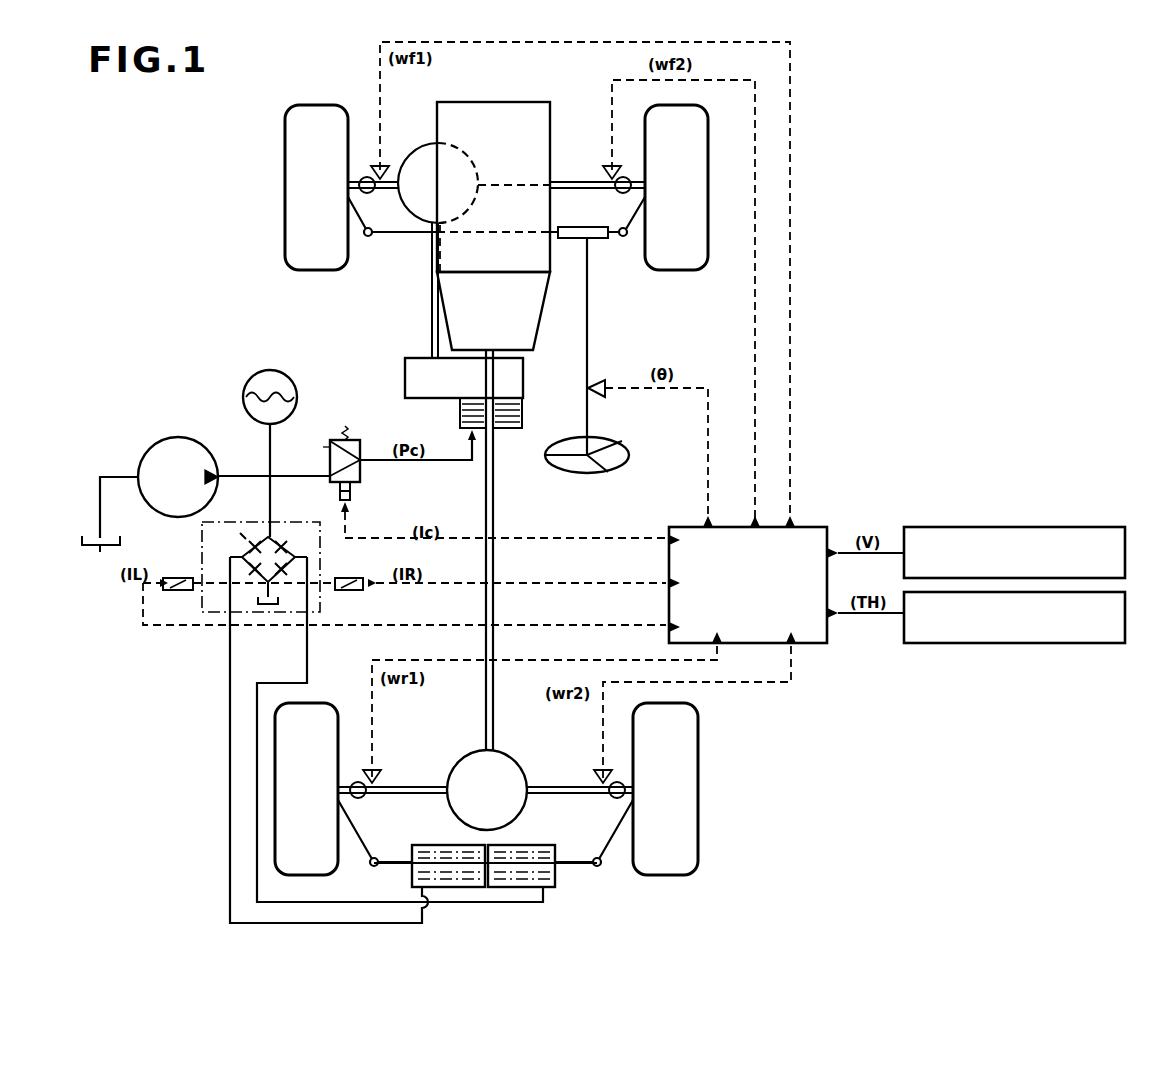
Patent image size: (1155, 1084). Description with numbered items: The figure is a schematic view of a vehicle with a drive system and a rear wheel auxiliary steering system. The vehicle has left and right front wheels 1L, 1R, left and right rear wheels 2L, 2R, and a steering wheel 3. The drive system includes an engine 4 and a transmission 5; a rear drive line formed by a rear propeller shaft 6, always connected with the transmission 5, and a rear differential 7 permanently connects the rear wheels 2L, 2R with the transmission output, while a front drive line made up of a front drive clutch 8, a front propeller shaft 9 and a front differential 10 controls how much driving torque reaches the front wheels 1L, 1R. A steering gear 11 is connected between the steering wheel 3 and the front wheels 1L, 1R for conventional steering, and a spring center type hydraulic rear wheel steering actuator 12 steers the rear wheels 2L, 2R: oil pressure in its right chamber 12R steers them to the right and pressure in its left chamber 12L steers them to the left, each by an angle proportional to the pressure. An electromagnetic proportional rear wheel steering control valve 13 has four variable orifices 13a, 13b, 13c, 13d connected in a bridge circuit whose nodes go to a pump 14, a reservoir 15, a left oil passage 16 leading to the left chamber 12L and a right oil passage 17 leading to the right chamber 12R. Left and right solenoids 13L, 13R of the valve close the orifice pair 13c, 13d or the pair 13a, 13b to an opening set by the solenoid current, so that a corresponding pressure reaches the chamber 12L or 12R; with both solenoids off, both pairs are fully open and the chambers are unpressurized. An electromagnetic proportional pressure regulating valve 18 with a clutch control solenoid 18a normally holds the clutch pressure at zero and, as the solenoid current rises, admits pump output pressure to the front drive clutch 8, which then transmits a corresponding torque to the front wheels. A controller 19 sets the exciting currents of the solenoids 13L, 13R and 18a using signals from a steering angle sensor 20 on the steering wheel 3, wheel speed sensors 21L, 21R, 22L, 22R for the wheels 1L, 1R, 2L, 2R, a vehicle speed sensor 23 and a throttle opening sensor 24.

The left front wheel 1L is at (285, 185).
The right front wheel 1R is at (690, 270).
The left rear wheel 2L is at (338, 872).
The right rear wheel 2R is at (698, 800).
The steering wheel 3 is at (614, 444).
The engine 4 is at (501, 146).
The transmission 5 is at (501, 330).
The rear propeller shaft 6 is at (486, 497).
The rear differential 7 is at (514, 771).
The front drive clutch 8 is at (497, 428).
The front propeller shaft 9 is at (432, 290).
The front differential 10 is at (427, 160).
The steering gear 11 is at (602, 238).
The rear wheel steering actuator 12 is at (555, 870).
The left chamber 12L is at (437, 845).
The right chamber 12R is at (528, 845).
The rear wheel steering control valve 13 is at (209, 612).
The variable orifice 13a is at (254, 543).
The variable orifice 13b is at (285, 577).
The variable orifice 13c is at (255, 577).
The variable orifice 13d is at (282, 543).
The left solenoid 13L is at (178, 576).
The right solenoid 13R is at (348, 578).
The pump 14 is at (180, 438).
The reservoir 15 is at (97, 552).
The left oil passage 16 is at (228, 762).
The right oil passage 17 is at (257, 813).
The pressure regulating valve 18 is at (347, 438).
The clutch control solenoid 18a is at (351, 491).
The controller 19 is at (809, 526).
The steering angle sensor 20 is at (600, 380).
The wheel speed sensor 21L is at (377, 166).
The wheel speed sensor 21R is at (611, 175).
The wheel speed sensor 22L is at (374, 782).
The wheel speed sensor 22R is at (602, 782).
The vehicle speed sensor 23 is at (1012, 527).
The throttle opening sensor 24 is at (997, 643).